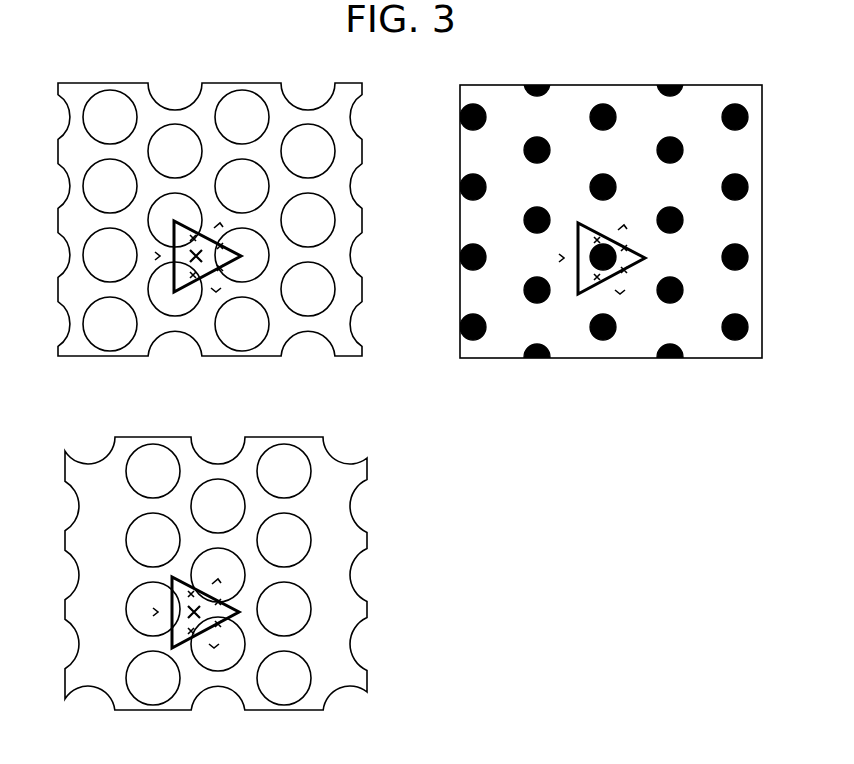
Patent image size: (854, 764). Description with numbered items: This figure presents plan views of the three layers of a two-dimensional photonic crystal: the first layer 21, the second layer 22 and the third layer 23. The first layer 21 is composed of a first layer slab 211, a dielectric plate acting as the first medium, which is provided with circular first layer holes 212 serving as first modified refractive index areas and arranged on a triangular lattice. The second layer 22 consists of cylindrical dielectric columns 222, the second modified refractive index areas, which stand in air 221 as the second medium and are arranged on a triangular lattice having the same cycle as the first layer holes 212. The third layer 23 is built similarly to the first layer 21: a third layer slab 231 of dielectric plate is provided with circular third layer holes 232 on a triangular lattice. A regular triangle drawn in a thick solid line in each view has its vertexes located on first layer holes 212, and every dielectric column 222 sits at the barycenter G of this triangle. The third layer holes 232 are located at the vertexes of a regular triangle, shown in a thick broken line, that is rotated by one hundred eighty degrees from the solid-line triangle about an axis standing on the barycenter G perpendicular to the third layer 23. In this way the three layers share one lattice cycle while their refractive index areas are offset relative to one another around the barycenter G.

The first layer 21 is at (227, 200).
The second layer 22 is at (640, 207).
The third layer 23 is at (234, 552).
The first layer slab 211 is at (283, 223).
The first layer holes 212 is at (308, 150).
The air 221 is at (732, 155).
The dielectric columns 222 is at (735, 117).
The third layer slab 231 is at (323, 480).
The third layer holes 232 is at (286, 540).
The barycenter G is at (241, 256).